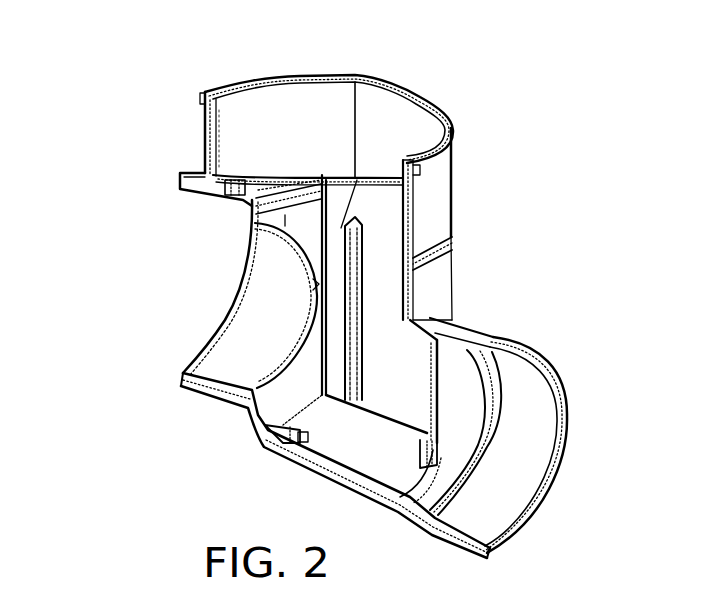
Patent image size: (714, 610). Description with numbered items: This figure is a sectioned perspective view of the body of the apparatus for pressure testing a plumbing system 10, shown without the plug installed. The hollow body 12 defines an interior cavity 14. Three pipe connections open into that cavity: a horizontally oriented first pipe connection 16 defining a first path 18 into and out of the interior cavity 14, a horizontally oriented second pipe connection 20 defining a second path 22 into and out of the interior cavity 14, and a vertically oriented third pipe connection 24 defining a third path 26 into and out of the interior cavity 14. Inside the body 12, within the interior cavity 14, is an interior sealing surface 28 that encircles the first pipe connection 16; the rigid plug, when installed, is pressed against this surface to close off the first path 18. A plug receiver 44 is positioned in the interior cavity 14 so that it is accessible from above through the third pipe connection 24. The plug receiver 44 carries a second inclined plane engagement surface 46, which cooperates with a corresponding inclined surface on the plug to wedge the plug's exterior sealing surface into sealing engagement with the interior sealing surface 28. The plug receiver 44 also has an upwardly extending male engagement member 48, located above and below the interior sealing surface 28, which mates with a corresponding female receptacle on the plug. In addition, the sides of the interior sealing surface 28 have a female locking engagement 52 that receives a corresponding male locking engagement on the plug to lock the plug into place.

The apparatus for pressure testing a plumbing system 10 is at (120, 166).
The hollow body 12 is at (448, 210).
The interior cavity 14 is at (400, 127).
The first pipe connection 16 is at (182, 380).
The first path 18 is at (185, 340).
The second pipe connection 20 is at (523, 530).
The second path 22 is at (530, 387).
The third pipe connection 24 is at (205, 92).
The third path 26 is at (297, 100).
The interior sealing surface 28 is at (283, 223).
The plug receiver 44 is at (358, 80).
The second inclined plane engagement surface 46 is at (362, 297).
The male engagement member 48 is at (252, 200).
The female locking engagement 52 is at (313, 283).